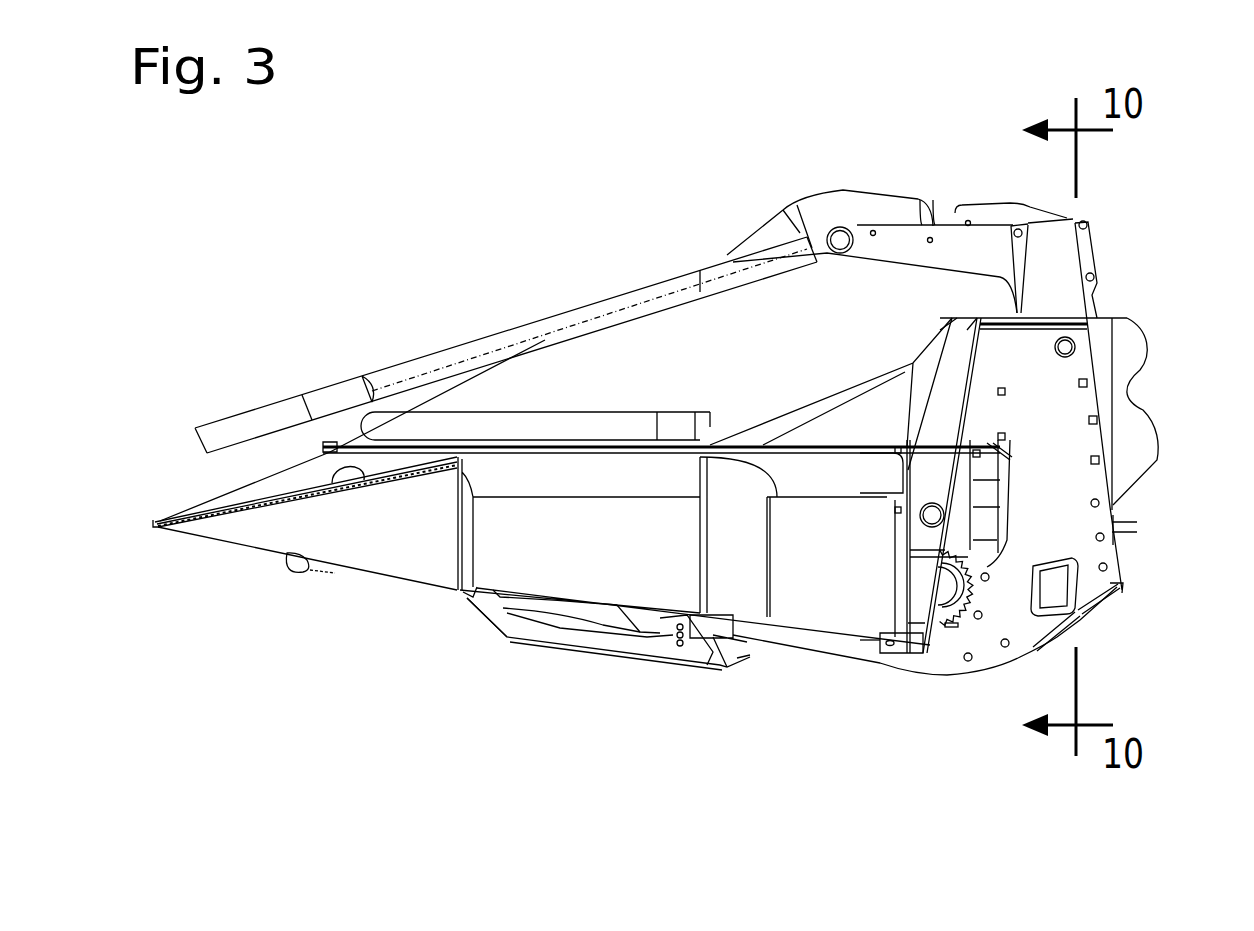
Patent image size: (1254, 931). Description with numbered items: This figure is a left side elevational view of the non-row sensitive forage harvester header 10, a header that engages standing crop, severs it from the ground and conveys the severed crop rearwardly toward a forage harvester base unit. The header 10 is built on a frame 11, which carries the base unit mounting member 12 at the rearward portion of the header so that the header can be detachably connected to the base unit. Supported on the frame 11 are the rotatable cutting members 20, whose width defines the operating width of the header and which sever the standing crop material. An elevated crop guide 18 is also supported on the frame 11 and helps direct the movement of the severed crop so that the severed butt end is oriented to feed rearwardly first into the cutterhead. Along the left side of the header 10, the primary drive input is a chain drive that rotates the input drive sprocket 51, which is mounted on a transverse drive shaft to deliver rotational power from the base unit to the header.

The non-row sensitive forage harvester header 10 is at (672, 152).
The frame 11 is at (903, 667).
The base unit mounting member 12 is at (1132, 293).
The elevated crop guide 18 is at (437, 364).
The rotatable cutting member 20 is at (570, 393).
The input drive sprocket 51 is at (960, 592).